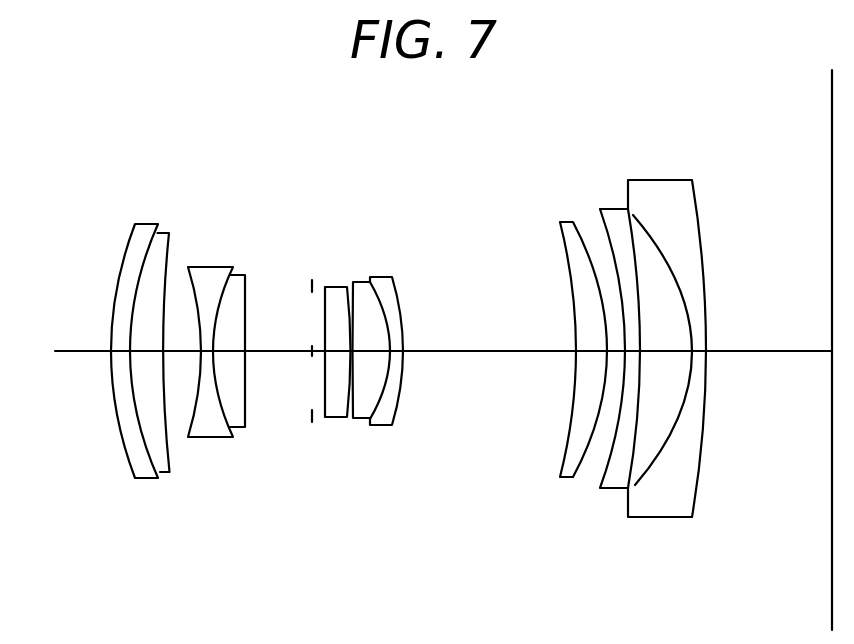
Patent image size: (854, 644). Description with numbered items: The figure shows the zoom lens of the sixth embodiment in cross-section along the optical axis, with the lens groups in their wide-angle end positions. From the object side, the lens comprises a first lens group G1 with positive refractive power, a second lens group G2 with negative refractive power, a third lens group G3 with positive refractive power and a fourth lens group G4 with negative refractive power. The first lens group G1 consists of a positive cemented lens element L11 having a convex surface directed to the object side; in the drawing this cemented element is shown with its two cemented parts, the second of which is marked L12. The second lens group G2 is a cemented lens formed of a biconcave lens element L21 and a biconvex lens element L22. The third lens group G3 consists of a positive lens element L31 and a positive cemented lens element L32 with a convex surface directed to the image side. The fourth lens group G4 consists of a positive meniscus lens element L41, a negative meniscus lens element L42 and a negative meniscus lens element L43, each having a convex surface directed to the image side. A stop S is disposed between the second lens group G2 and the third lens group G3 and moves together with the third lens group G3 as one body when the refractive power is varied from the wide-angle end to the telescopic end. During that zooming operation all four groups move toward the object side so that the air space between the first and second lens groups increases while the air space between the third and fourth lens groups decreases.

The first lens group G1 is at (178, 218).
The second lens group G2 is at (252, 218).
The third lens group G3 is at (407, 218).
The fourth lens group G4 is at (716, 170).
The stop S is at (310, 277).
The positive cemented lens element L11 is at (148, 478).
The second lens of first lens group L12 is at (163, 468).
The biconcave lens element L21 is at (212, 427).
The biconvex lens element L22 is at (238, 425).
The positive lens element L31 is at (333, 413).
The positive cemented lens element L32 is at (380, 422).
The positive meniscus lens element L41 is at (565, 477).
The negative meniscus lens element L42 is at (613, 478).
The negative meniscus lens element L43 is at (658, 500).